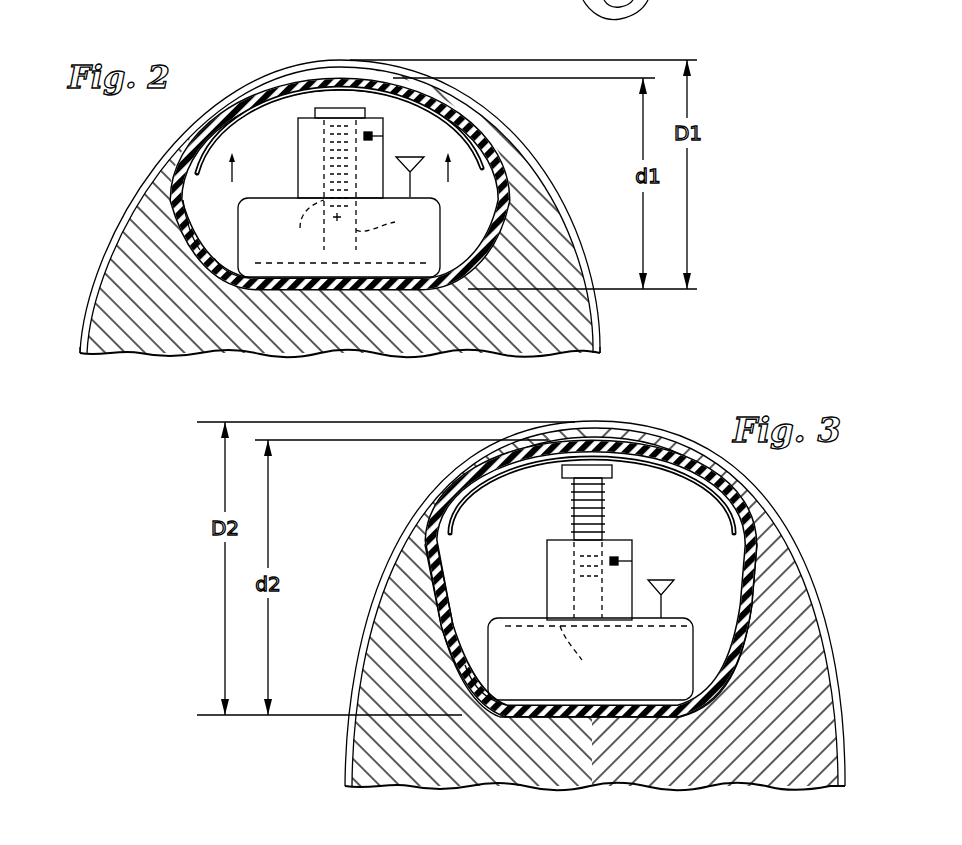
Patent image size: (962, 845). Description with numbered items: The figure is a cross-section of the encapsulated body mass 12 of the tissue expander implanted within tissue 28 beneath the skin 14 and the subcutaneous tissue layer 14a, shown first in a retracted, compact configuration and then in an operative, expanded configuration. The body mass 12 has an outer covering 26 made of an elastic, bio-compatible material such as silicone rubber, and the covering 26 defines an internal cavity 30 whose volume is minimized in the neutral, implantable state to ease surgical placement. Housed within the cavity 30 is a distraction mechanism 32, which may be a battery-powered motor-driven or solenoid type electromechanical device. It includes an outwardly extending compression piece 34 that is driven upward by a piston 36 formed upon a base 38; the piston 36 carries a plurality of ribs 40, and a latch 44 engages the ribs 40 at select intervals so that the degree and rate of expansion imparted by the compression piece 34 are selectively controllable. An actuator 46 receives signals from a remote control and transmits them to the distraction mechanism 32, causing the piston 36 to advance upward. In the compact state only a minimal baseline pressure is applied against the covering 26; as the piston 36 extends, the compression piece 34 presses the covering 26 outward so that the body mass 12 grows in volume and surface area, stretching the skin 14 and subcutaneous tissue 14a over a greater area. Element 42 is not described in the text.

In FIG. 2, the encapsulated body mass 12 is at (178, 172).
In FIG. 3, the encapsulated body mass 12 is at (750, 637).
In FIG. 2, the skin 14 is at (270, 63).
In FIG. 3, the skin 14 is at (633, 423).
In FIG. 2, the subcutaneous tissue layer 14a is at (323, 72).
In FIG. 3, the subcutaneous tissue layer 14a is at (672, 448).
In FIG. 2, the outer covering 26 is at (143, 163).
In FIG. 3, the outer covering 26 is at (757, 563).
In FIG. 2, the tissue 28 is at (530, 333).
In FIG. 3, the tissue 28 is at (773, 690).
In FIG. 2, the internal cavity 30 is at (208, 217).
In FIG. 3, the internal cavity 30 is at (448, 542).
In FIG. 2, the distraction mechanism 32 is at (231, 242).
In FIG. 3, the distraction mechanism 32 is at (498, 638).
In FIG. 2, the compression piece 34 is at (422, 93).
In FIG. 3, the compression piece 34 is at (678, 476).
In FIG. 2, the piston 36 is at (373, 225).
In FIG. 3, the piston 36 is at (573, 518).
In FIG. 2, the base 38 is at (375, 258).
In FIG. 3, the base 38 is at (570, 628).
In FIG. 2, the ribs 40 is at (339, 237).
In FIG. 3, the ribs 40 is at (590, 659).
In FIG. 2, the mounting housing 42 is at (307, 152).
In FIG. 3, the mounting housing 42 is at (557, 583).
In FIG. 2, the latch 44 is at (372, 137).
In FIG. 3, the latch 44 is at (623, 565).
In FIG. 2, the actuator 46 is at (415, 180).
In FIG. 3, the actuator 46 is at (673, 590).